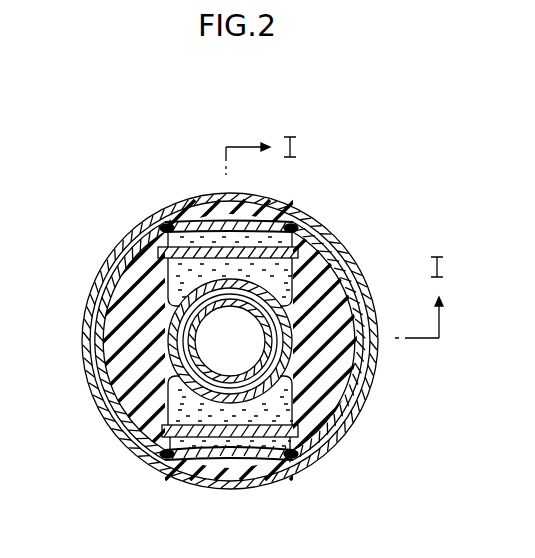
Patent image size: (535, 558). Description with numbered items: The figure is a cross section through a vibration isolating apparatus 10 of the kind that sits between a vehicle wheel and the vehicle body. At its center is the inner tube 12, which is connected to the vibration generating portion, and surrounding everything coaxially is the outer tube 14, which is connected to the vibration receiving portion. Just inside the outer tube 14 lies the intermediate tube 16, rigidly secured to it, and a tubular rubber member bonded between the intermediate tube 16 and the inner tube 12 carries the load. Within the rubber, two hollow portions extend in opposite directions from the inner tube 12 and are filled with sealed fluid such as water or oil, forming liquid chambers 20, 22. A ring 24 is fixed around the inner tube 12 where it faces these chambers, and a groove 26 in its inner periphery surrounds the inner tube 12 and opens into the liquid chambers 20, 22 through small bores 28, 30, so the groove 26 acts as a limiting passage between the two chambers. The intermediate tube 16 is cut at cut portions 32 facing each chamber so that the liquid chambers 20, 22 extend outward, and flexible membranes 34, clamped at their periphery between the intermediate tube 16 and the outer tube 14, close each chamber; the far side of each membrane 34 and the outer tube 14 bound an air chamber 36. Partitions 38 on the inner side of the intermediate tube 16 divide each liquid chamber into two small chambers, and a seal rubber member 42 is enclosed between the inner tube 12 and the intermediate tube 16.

The vibration isolating apparatus 10 is at (375, 143).
The inner tube 12 is at (231, 281).
The outer tube 14 is at (332, 274).
The intermediate tube 16 is at (375, 325).
The liquid chamber 20 is at (184, 222).
The liquid chamber 22 is at (272, 410).
The ring 24 is at (292, 341).
The groove 26 is at (232, 406).
The small bore 28 is at (252, 246).
The small bore 30 is at (232, 412).
The cut portion 32 is at (164, 227).
The flexible membrane 34 is at (243, 236).
The air chamber 36 is at (210, 220).
The partition 38 is at (302, 247).
The seal rubber member 42 is at (355, 293).